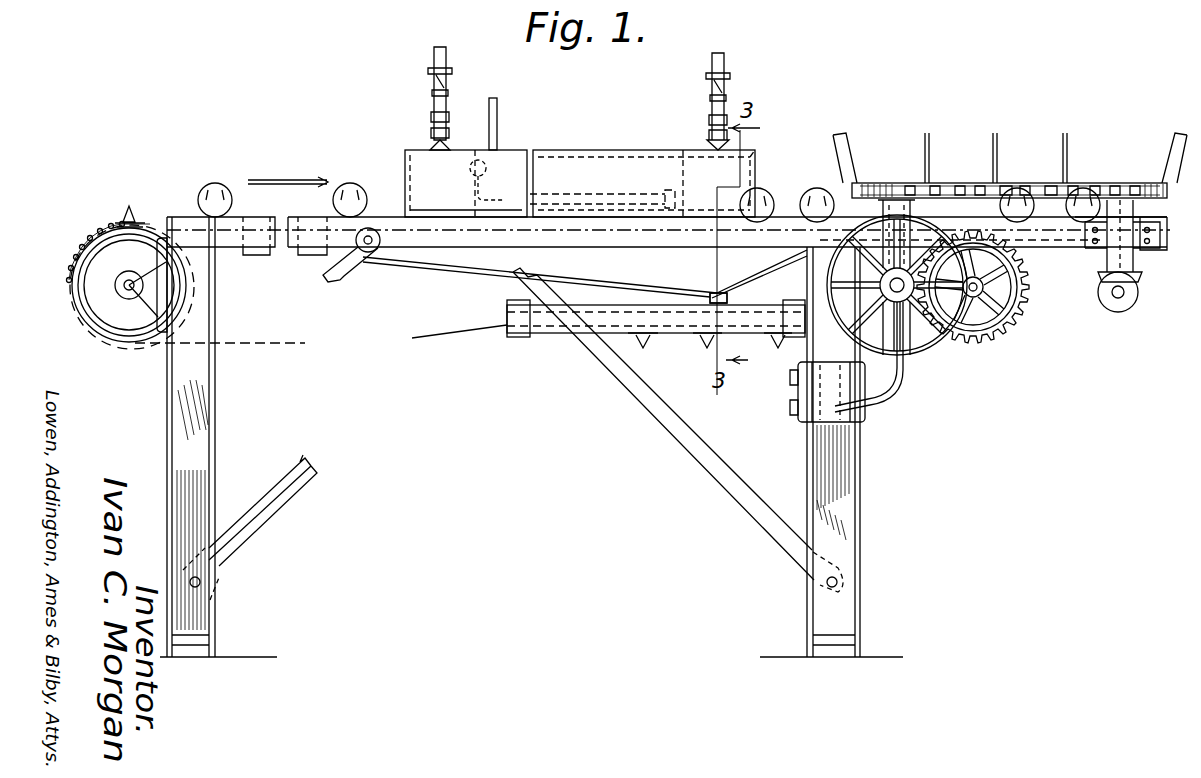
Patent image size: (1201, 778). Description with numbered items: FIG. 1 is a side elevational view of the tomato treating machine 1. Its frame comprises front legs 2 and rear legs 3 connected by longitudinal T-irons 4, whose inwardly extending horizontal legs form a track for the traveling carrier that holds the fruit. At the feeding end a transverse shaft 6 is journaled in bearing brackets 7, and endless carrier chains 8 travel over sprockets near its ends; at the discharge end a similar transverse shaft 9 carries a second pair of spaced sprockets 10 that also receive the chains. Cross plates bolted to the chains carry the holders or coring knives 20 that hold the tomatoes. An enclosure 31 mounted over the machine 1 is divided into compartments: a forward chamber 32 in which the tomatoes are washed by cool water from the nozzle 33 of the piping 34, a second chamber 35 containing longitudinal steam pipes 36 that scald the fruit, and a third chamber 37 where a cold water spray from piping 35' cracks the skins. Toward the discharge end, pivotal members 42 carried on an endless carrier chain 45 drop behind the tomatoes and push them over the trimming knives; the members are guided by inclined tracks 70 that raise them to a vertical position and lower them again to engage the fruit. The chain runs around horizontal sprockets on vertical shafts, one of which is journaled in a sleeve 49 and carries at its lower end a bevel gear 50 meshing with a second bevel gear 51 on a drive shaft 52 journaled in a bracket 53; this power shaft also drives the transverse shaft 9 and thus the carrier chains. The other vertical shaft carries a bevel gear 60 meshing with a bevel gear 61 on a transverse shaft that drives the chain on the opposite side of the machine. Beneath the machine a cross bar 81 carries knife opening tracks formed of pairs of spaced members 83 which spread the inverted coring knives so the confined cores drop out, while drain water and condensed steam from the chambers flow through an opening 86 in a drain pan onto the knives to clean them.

The main frame beam 1 is at (668, 236).
The front legs 2 is at (216, 432).
The rear legs 3 is at (860, 462).
The longitudinal T-irons 4 is at (462, 250).
The transverse shaft 6 is at (122, 286).
The bearing brackets 7 is at (152, 318).
The endless carrier chains 8 is at (82, 248).
The transverse shaft 9 is at (974, 312).
The spaced sprockets 10 is at (1022, 282).
The coring knives 20 is at (129, 206).
The enclosure 31 is at (620, 150).
The chamber 32 is at (415, 167).
The nozzle 33 is at (433, 148).
The piping 34 is at (434, 60).
The second chamber 35 is at (528, 149).
The piping 35' is at (744, 101).
The longitudinal steam pipes 36 is at (588, 198).
The third chamber 37 is at (757, 158).
The pivotal members 42 is at (843, 150).
The carrier chain 45 is at (1095, 185).
The sleeve 49 is at (893, 195).
The bevel gear 50 is at (880, 302).
The second bevel gear 51 is at (966, 278).
The drive shaft 52 is at (880, 278).
The bracket 53 is at (886, 386).
The bevel gear 60 is at (1140, 280).
The bevel gear 61 is at (1138, 295).
The inclined tracks 70 is at (935, 190).
The cross bar 81 is at (515, 303).
The spaced members 83 is at (617, 310).
The opening 86 is at (716, 292).